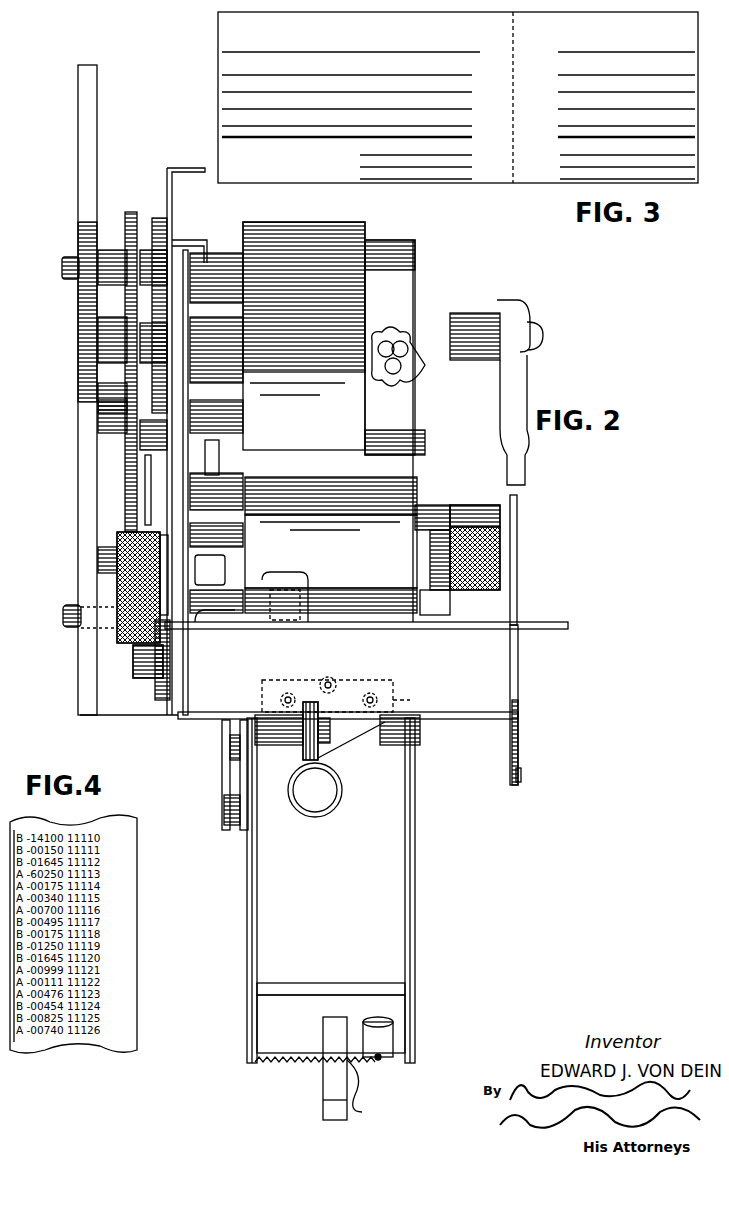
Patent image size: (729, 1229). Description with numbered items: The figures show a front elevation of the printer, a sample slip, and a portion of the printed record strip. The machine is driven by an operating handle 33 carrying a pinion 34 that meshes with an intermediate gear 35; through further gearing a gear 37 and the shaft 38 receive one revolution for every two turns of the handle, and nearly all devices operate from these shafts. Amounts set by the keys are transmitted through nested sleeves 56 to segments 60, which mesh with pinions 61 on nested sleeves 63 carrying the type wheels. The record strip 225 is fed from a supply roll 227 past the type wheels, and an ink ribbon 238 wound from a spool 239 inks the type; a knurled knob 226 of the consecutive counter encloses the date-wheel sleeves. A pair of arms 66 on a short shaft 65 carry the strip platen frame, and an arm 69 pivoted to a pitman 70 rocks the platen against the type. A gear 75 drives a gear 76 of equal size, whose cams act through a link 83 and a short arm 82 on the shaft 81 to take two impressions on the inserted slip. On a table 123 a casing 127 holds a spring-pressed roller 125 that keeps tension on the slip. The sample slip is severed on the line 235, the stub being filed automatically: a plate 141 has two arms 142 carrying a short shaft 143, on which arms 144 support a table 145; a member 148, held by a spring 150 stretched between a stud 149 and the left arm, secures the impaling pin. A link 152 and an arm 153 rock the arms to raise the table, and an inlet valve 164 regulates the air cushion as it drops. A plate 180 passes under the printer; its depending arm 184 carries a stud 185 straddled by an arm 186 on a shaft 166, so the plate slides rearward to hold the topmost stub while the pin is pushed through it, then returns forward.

In FIG. 2, the operating handle 33 is at (510, 400).
In FIG. 2, the pinion 34 is at (98, 350).
In FIG. 2, the intermediate gear 35 is at (135, 455).
In FIG. 2, the gear 37 is at (130, 212).
In FIG. 2, the shaft 38 is at (70, 257).
In FIG. 2, the nested sleeves 56 is at (76, 624).
In FIG. 2, the segments 60 is at (118, 595).
In FIG. 2, the pinions 61 is at (117, 532).
In FIG. 2, the nested sleeves 63 is at (165, 545).
In FIG. 2, the short shaft 65 is at (232, 446).
In FIG. 2, the arms 66 is at (215, 470).
In FIG. 2, the arm 69 is at (142, 434).
In FIG. 2, the pitman 70 is at (187, 441).
In FIG. 2, the gear 75 is at (128, 303).
In FIG. 2, the gear 76 is at (146, 470).
In FIG. 2, the shaft 81 is at (170, 700).
In FIG. 2, the short arm 82 is at (158, 665).
In FIG. 2, the link 83 is at (174, 597).
In FIG. 2, the table 123 is at (552, 627).
In FIG. 2, the roller 125 is at (282, 604).
In FIG. 2, the casing 127 is at (287, 582).
In FIG. 2, the plate 141 is at (372, 700).
In FIG. 2, the arms 142 is at (268, 746).
In FIG. 2, the short shaft 143 is at (280, 718).
In FIG. 2, the arms 144 is at (250, 890).
In FIG. 2, the table 145 is at (390, 1000).
In FIG. 2, the member 148 is at (358, 1088).
In FIG. 2, the stud 149 is at (382, 1060).
In FIG. 2, the spring 150 is at (292, 1068).
In FIG. 2, the link 152 is at (224, 788).
In FIG. 2, the arm 153 is at (226, 726).
In FIG. 2, the inlet valve 164 is at (328, 802).
In FIG. 2, the shaft 166 is at (455, 505).
In FIG. 2, the plate 180 is at (446, 719).
In FIG. 2, the depending arm 184 is at (506, 748).
In FIG. 2, the stud 185 is at (521, 776).
In FIG. 2, the arm 186 is at (518, 590).
In FIG. 2, the record strip 225 is at (352, 432).
In FIG. 2, the knurled knob 226 is at (503, 552).
In FIG. 2, the supply roll 227 is at (348, 240).
In FIG. 3, the line 235 is at (515, 183).
In FIG. 2, the ink ribbon 238 is at (400, 312).
In FIG. 2, the spool 239 is at (418, 250).